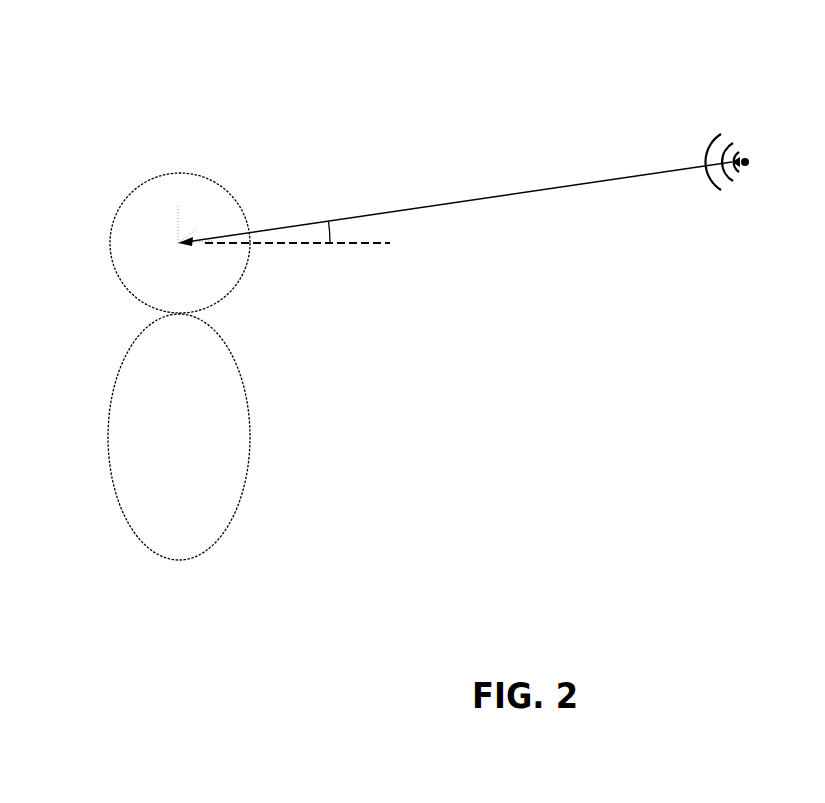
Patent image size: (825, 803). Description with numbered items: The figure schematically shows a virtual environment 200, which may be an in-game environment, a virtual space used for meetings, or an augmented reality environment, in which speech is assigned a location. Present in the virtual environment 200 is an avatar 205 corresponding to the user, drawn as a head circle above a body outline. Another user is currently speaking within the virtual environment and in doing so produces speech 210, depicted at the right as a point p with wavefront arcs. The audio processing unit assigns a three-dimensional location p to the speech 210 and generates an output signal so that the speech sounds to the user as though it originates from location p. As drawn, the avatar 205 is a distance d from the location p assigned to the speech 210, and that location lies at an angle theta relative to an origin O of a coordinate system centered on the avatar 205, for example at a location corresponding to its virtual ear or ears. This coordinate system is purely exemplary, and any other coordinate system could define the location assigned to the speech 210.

The virtual environment 200 is at (226, 78).
The avatar 205 is at (179, 437).
The speech 210 is at (736, 143).